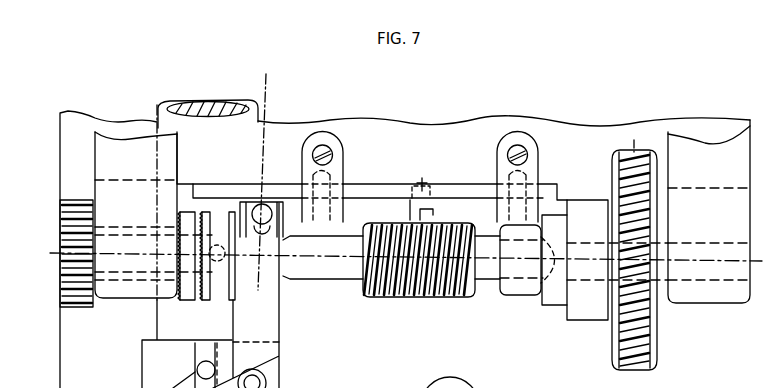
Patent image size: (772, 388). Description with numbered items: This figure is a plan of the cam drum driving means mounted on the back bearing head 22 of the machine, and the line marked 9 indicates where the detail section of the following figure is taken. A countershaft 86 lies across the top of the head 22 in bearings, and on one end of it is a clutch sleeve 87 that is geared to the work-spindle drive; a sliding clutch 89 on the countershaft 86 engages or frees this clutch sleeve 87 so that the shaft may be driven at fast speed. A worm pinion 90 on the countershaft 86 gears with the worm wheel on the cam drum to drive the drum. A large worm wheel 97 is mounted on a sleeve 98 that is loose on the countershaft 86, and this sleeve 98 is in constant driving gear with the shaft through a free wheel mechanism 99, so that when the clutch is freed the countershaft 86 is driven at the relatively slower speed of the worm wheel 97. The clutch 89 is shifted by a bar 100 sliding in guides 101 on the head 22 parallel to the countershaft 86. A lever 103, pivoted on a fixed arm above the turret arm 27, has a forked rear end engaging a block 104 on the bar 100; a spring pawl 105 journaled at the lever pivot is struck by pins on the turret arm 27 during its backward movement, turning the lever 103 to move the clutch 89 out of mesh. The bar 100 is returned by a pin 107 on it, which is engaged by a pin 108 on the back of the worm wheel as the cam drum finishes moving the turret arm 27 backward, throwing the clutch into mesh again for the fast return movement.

The section line 9- 9 is at (265, 173).
The bearing head 22 is at (406, 244).
The turret arm 27 is at (201, 273).
The countershaft 86 is at (475, 258).
The clutch sleeve 87 is at (174, 300).
The sliding clutch 89 is at (236, 282).
The worm pinion 90 is at (442, 305).
The worm wheel 97 is at (645, 346).
The sleeve 98 is at (587, 260).
The free wheel mechanism 99 is at (533, 271).
The bar 100 is at (469, 191).
The guides 101 is at (338, 141).
The lever 103 is at (263, 331).
The block 104 is at (265, 203).
The spring pawl 105 is at (268, 380).
The pin 107 is at (423, 180).
The pin 108 is at (436, 213).